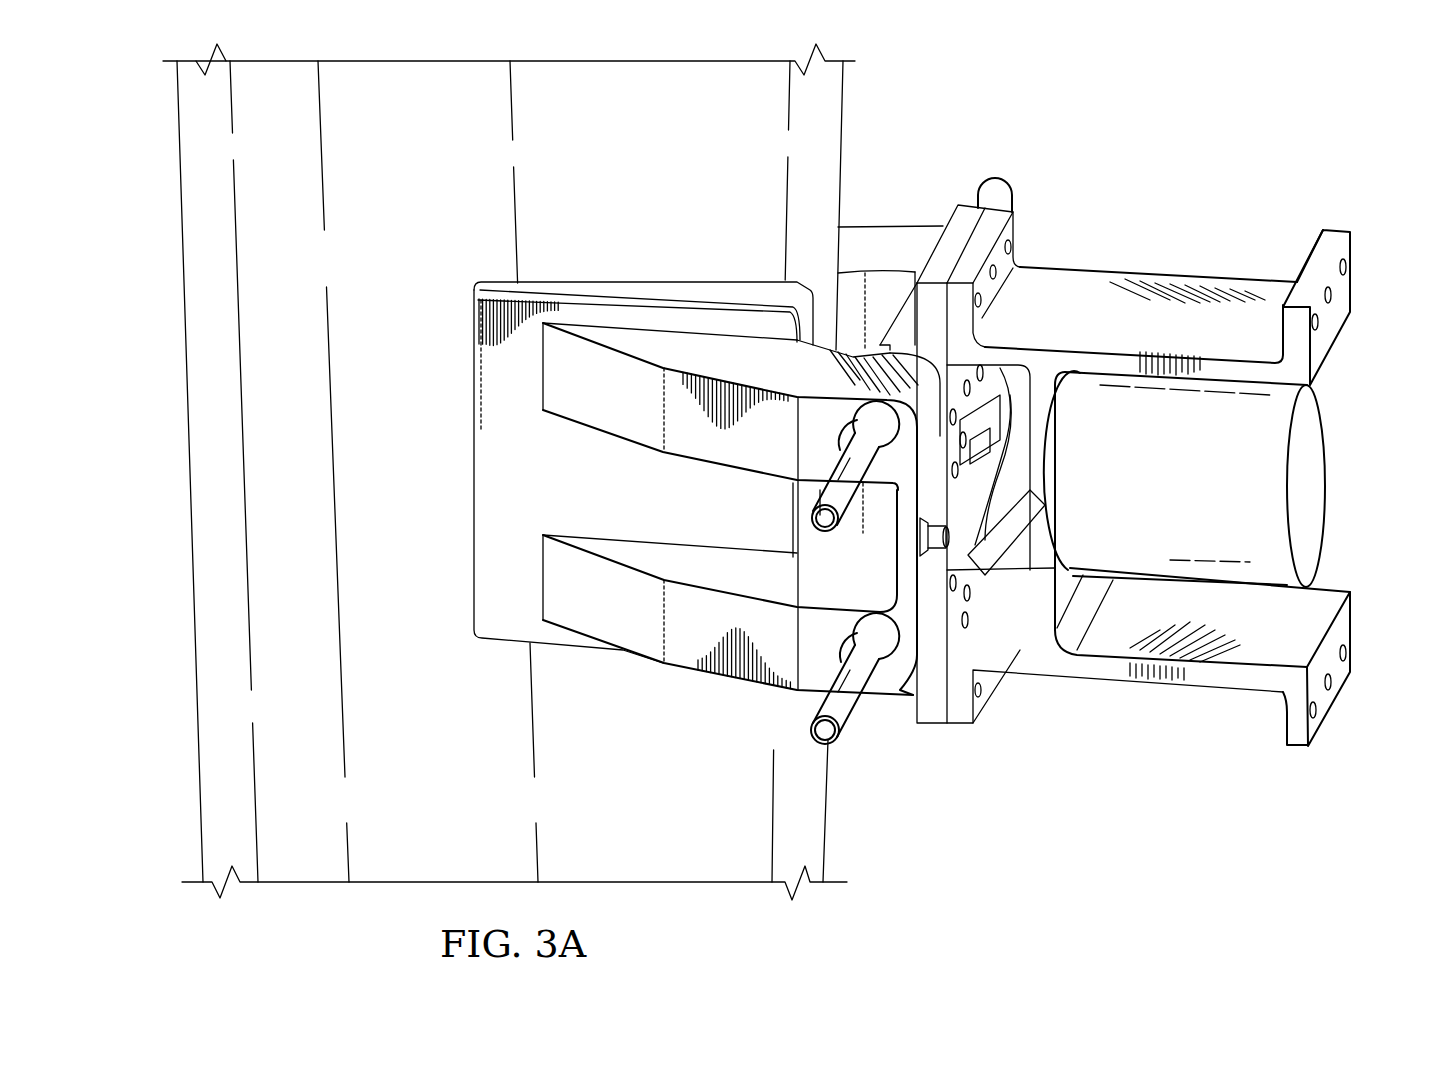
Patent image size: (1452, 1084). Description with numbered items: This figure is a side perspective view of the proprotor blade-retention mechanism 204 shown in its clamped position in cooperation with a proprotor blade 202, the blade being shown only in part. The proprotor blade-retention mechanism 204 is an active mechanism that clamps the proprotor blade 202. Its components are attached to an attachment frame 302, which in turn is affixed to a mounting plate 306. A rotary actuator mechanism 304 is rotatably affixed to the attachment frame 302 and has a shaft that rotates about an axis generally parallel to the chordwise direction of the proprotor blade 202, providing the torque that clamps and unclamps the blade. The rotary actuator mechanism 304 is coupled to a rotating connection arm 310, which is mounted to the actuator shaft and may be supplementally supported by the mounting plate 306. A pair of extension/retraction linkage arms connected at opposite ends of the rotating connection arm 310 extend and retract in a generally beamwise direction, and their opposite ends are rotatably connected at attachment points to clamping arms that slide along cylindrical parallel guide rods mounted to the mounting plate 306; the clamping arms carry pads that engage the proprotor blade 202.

The proprotor blade 202 is at (843, 101).
The proprotor blade-retention mechanism 204 is at (1207, 116).
The attachment frame 302 is at (1325, 700).
The rotary actuator mechanism 304 is at (1313, 457).
The mounting plate 306 is at (933, 713).
The rotating connection arm 310 is at (985, 472).